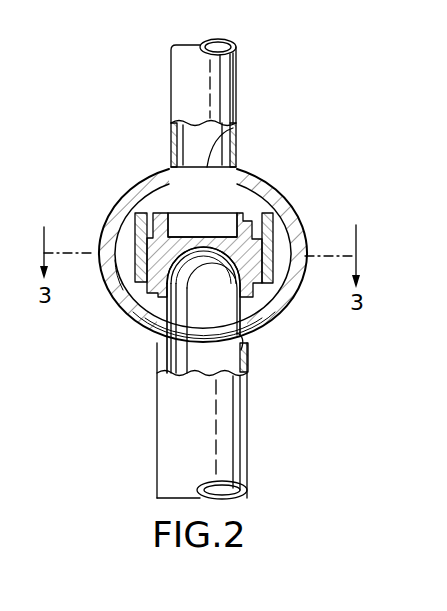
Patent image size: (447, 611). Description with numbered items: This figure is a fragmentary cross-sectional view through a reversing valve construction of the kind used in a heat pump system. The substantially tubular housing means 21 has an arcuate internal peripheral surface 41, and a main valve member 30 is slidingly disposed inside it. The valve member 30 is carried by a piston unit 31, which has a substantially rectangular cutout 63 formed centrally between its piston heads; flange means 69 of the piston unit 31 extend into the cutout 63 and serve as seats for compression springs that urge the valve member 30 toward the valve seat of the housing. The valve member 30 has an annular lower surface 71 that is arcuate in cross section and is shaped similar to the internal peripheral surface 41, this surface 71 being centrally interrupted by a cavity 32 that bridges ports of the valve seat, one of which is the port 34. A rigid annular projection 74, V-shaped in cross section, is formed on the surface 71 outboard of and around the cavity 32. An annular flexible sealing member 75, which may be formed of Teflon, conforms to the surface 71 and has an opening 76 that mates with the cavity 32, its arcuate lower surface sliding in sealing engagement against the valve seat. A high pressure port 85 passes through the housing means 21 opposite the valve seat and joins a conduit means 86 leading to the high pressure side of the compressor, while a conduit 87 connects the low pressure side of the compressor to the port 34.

The tubular housing means 21 is at (290, 190).
The main valve member 30 is at (128, 302).
The piston unit 31 is at (273, 233).
The cavity 32 is at (167, 363).
The port 34 is at (190, 372).
The arcuate internal peripheral surface 41 is at (118, 288).
The rectangular cutout 63 is at (153, 215).
The flange means 69 is at (217, 221).
The annular lower surface 71 is at (153, 338).
The annular projection 74 is at (153, 323).
The annular flexible sealing member 75 is at (272, 310).
The opening 76 is at (245, 347).
The high pressure port 85 is at (233, 130).
The conduit means 86 is at (237, 68).
The conduit 87 is at (247, 448).